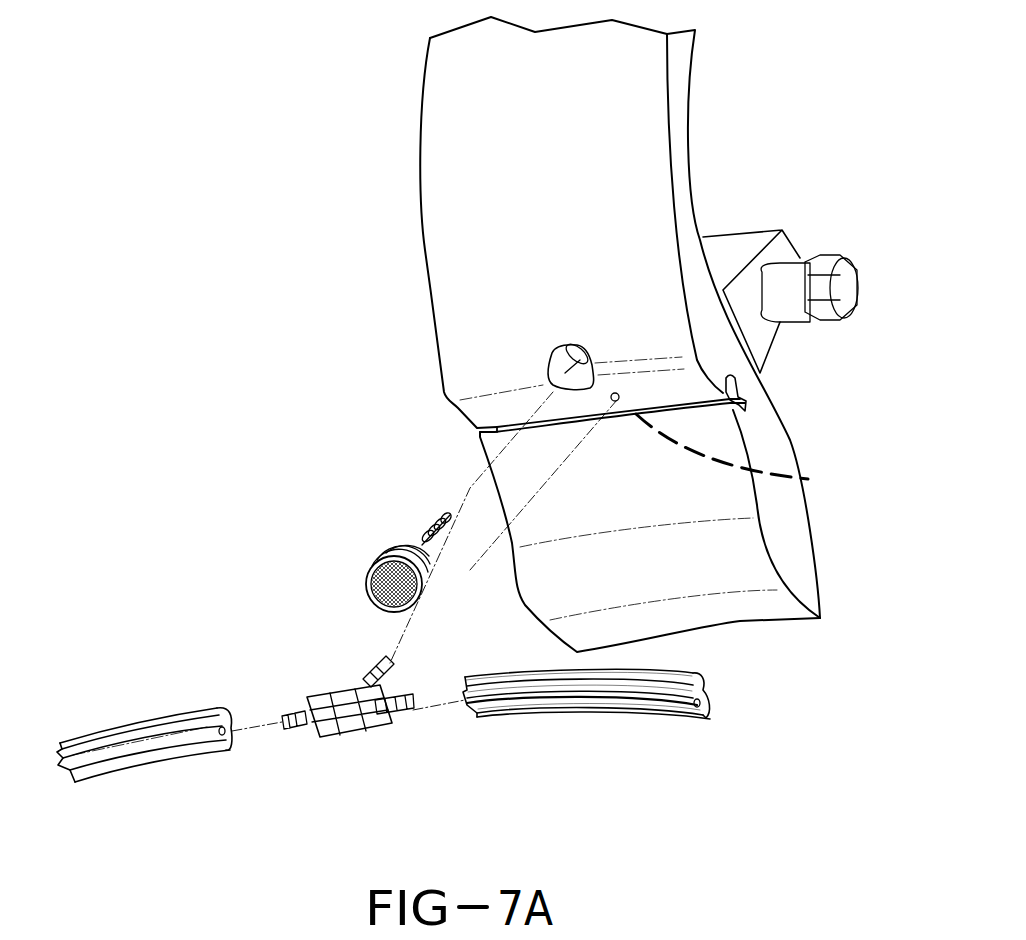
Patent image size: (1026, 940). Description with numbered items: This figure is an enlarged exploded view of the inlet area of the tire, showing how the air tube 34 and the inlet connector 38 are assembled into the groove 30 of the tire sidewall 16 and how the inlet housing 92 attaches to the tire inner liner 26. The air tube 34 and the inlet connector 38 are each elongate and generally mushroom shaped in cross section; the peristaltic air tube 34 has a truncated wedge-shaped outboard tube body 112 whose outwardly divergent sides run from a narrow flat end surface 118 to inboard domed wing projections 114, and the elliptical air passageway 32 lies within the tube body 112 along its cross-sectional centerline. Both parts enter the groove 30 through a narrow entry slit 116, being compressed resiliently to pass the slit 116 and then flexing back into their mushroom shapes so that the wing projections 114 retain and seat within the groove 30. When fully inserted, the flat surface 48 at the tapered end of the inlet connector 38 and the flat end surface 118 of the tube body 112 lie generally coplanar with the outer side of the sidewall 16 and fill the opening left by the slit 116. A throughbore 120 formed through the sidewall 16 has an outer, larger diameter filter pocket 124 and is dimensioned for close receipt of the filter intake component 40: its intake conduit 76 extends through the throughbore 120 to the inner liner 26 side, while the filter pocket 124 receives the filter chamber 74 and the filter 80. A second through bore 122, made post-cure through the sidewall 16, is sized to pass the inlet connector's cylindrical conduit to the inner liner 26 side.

The tire sidewall 16 is at (503, 115).
The tire inner liner 26 is at (694, 121).
The inlet housing 92 is at (745, 222).
The filter pocket 124 is at (553, 352).
The throughbore 120 is at (556, 363).
The groove 30 is at (742, 386).
The entry slit 116 is at (700, 412).
The second through bore 122 is at (807, 479).
The filter intake component 40 is at (346, 546).
The filter chamber 74 is at (368, 565).
The intake conduit 76 is at (415, 540).
The filter 80 is at (390, 590).
The inlet connector 38 is at (348, 747).
The flat surface 48 is at (342, 723).
The air tube 34 is at (137, 768).
The air passageway 32 is at (225, 733).
The wing projections 114 is at (695, 680).
The tube body 112 is at (637, 690).
The flat end surface 118 is at (560, 702).